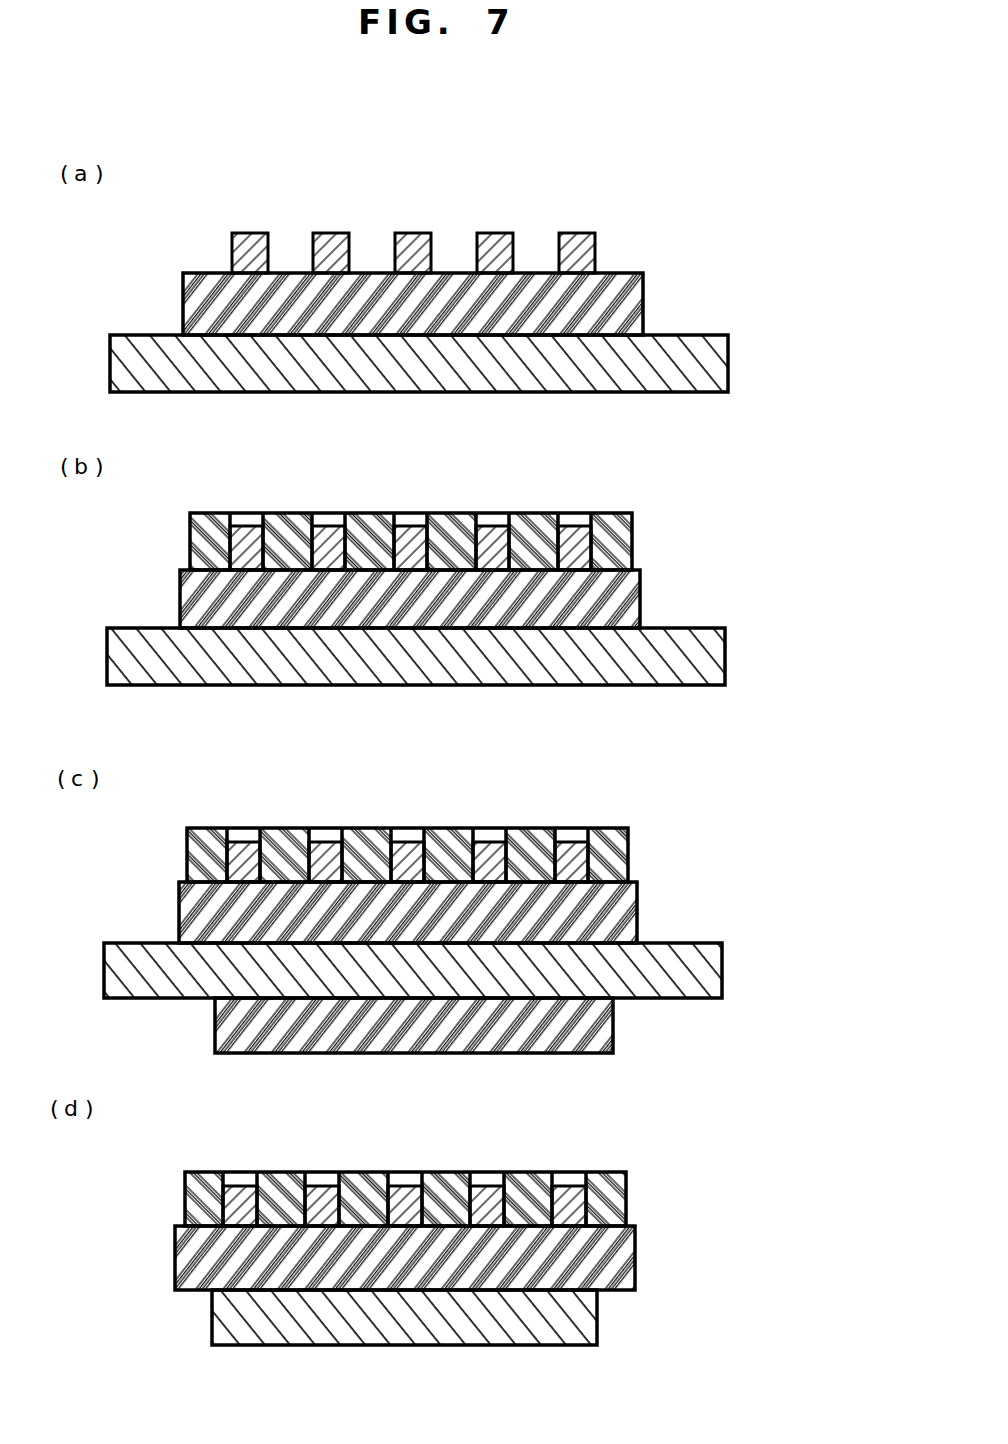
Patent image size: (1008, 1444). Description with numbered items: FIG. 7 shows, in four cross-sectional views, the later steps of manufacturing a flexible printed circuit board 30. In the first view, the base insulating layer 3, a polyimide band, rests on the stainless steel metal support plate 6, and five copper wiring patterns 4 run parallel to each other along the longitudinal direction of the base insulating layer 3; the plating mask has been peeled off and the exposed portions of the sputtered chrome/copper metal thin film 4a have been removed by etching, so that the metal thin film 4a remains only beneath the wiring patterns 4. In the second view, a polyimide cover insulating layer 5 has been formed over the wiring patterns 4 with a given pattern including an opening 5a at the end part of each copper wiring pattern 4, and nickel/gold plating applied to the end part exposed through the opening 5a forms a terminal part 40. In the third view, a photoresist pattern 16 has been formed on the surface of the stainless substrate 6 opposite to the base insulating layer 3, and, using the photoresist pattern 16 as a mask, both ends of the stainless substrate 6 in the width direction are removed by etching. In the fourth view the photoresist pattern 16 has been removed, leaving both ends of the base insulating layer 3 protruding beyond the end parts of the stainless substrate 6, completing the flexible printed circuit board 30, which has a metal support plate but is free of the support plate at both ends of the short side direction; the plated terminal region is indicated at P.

The base insulating layer 3 is at (623, 310).
The wiring pattern 4 is at (596, 247).
The metal thin film 4a is at (564, 235).
The cover insulating layer 5 is at (620, 517).
The opening 5a is at (407, 517).
The metal support plate 6 is at (717, 373).
The photoresist pattern 16 is at (600, 1022).
The flexible printed circuit board 30 is at (613, 1148).
The terminal part 40 is at (495, 512).
The pressed portion P is at (485, 1172).